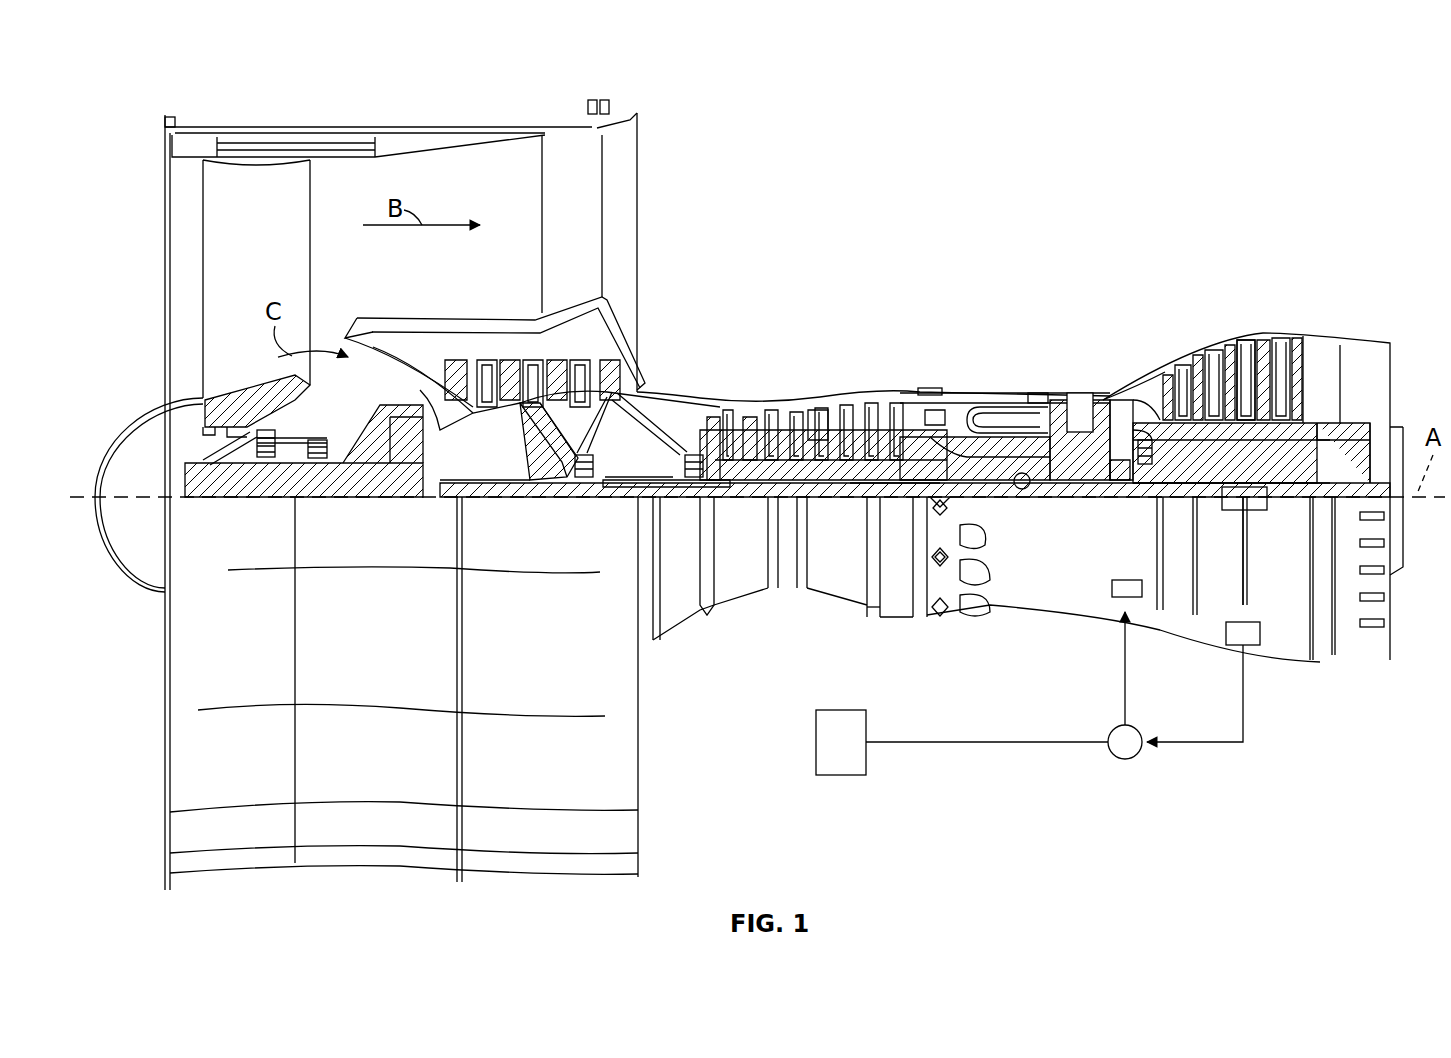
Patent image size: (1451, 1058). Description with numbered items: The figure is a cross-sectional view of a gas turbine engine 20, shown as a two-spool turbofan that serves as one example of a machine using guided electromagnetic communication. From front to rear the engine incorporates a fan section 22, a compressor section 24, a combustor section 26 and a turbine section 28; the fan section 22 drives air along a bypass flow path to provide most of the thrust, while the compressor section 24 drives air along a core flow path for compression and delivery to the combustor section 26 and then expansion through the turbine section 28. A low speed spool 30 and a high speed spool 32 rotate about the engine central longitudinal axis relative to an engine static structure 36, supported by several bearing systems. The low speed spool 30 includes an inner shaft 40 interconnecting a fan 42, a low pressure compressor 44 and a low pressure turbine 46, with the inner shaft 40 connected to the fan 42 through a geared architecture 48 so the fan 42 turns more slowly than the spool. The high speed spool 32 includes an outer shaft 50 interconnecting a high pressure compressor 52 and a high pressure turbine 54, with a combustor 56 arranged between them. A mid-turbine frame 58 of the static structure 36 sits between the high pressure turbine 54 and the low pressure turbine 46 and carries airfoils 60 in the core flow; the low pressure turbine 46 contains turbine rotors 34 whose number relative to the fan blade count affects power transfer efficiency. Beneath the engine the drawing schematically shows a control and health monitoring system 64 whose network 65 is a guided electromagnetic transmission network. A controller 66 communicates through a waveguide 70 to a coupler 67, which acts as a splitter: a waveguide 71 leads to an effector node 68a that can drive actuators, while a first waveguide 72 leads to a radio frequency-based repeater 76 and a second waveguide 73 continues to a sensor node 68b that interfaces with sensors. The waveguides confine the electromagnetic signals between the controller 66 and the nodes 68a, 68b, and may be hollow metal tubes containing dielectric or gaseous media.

The gas turbine engine 20 is at (1213, 165).
The fan section 22 is at (436, 115).
The compressor section 24 is at (825, 290).
The combustor section 26 is at (995, 290).
The turbine section 28 is at (1145, 290).
The low speed spool 30 is at (865, 507).
The high speed spool 32 is at (953, 430).
The turbine rotors 34 is at (1335, 453).
The engine static structure 36 is at (900, 620).
The inner shaft 40 is at (652, 497).
The fan 42 is at (281, 249).
The low pressure compressor 44 is at (553, 378).
The low pressure turbine 46 is at (1250, 352).
The geared architecture 48 is at (400, 462).
The outer shaft 50 is at (1025, 490).
The high pressure compressor 52 is at (815, 458).
The high pressure turbine 54 is at (1080, 395).
The combustor 56 is at (1018, 410).
The mid-turbine frame 58 is at (1132, 378).
The airfoils 60 is at (1127, 400).
The control and health monitoring system 64 is at (1197, 787).
The network 65 is at (1310, 750).
The controller 66 is at (818, 738).
The coupler 67 is at (1125, 762).
The effector node 68a is at (1105, 590).
The sensor node 68b is at (1250, 512).
The waveguide 70 is at (935, 745).
The waveguide 71 is at (1120, 675).
The first waveguide 72 is at (1243, 722).
The second waveguide 73 is at (1243, 592).
The radio frequency-based repeater 76 is at (1250, 650).